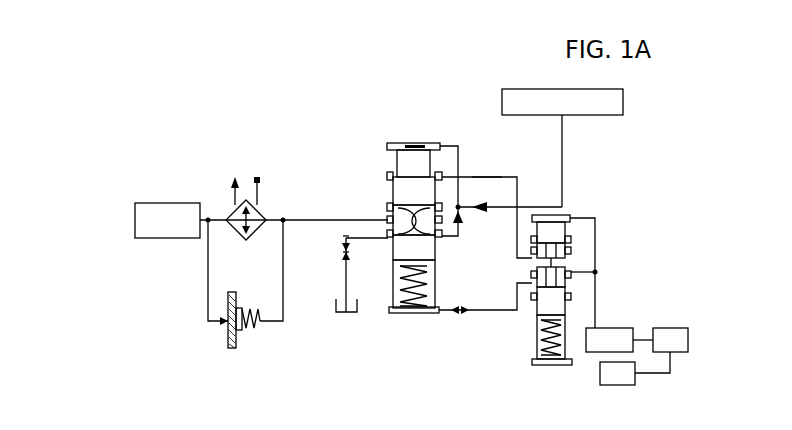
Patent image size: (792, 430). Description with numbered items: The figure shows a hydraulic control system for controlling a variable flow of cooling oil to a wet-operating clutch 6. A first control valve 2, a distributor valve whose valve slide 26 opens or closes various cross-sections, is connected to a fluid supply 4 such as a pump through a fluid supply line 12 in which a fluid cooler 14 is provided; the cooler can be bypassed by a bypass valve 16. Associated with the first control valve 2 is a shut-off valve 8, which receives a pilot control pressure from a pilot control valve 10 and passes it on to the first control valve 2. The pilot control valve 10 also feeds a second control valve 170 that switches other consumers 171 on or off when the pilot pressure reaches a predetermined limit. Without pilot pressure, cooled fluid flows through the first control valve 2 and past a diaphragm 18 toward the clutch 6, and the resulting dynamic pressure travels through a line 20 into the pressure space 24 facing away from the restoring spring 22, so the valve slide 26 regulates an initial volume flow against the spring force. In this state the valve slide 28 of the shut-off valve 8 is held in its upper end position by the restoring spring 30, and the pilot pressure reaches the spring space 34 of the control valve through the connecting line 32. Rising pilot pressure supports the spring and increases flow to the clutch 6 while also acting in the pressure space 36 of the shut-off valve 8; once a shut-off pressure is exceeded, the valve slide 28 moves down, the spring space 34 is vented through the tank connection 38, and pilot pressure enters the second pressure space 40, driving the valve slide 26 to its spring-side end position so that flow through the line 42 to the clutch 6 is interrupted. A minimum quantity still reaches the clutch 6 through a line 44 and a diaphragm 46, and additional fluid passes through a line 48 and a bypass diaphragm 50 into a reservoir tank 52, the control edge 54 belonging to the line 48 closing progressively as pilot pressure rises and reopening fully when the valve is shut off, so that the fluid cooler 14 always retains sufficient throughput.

The first control valve 2 is at (305, 230).
The fluid supply 4 is at (148, 222).
The clutch 6 is at (533, 103).
The shut-off valve 8 is at (637, 291).
The pilot control valve 10 is at (615, 333).
The fluid supply line 12 is at (303, 218).
The fluid cooler 14 is at (226, 216).
The bypass valve 16 is at (222, 330).
The diaphragm 18 is at (490, 177).
The line 20 is at (470, 175).
The restoring spring 22 is at (396, 294).
The pressure space 24 is at (399, 143).
The valve slide 26 is at (388, 181).
The valve slide 28 is at (550, 235).
The restoring spring 30 is at (557, 360).
The connecting line 32 is at (452, 240).
The spring space 34 is at (397, 306).
The pressure space 36 is at (566, 215).
The tank connection 38 is at (570, 290).
The second pressure space 40 is at (388, 172).
The line 42 is at (537, 210).
The line 44 is at (477, 313).
The diaphragm 46 is at (463, 218).
The line 48 is at (346, 238).
The bypass diaphragm 50 is at (342, 253).
The reservoir tank 52 is at (335, 307).
The control edge 54 is at (388, 220).
The second control valve 170 is at (676, 346).
The other consumers 171 is at (628, 378).